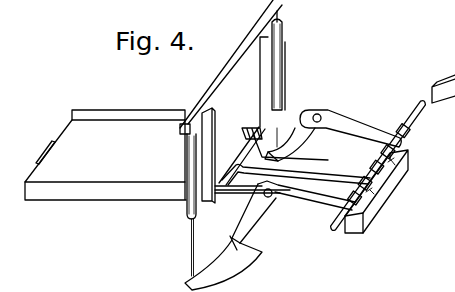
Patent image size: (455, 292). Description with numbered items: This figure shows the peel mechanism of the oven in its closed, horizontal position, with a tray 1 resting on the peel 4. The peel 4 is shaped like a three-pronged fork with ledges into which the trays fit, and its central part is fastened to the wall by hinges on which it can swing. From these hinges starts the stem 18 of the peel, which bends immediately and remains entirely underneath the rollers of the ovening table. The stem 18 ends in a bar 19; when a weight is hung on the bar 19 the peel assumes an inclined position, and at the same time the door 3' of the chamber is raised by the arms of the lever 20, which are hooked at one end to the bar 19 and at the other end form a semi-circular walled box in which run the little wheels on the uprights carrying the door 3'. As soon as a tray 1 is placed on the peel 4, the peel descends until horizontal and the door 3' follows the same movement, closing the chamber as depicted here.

The tray 1 is at (105, 146).
The peel 4 is at (105, 207).
The door of the oven 3' is at (252, 102).
The stem 18 is at (350, 138).
The bar 19 is at (378, 158).
The lever 20 is at (270, 235).